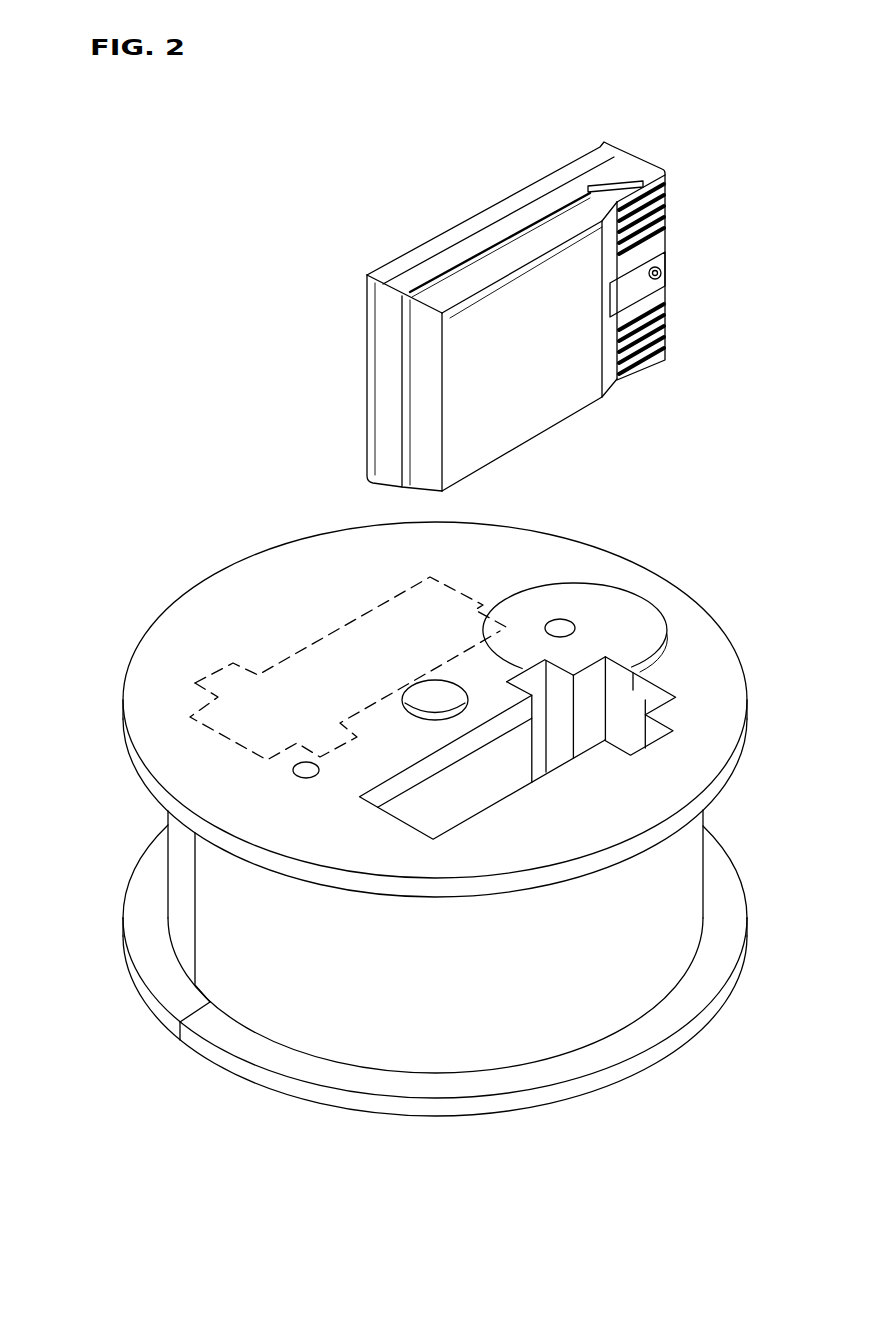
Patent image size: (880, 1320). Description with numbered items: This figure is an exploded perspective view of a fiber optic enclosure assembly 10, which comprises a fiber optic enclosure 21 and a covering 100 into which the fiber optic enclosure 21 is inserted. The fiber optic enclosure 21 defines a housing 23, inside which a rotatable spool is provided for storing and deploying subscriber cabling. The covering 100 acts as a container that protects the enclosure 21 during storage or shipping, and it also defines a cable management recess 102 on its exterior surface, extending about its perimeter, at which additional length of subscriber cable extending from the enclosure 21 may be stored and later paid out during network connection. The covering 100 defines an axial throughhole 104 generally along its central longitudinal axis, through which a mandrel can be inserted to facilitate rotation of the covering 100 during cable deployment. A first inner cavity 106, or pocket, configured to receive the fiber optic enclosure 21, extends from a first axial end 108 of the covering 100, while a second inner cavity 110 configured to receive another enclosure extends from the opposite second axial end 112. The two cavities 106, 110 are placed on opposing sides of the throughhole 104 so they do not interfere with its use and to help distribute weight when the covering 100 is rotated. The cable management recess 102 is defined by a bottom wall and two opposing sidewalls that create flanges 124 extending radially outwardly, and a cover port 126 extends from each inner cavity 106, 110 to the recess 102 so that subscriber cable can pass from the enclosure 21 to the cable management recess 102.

The fiber optic enclosure assembly 10 is at (729, 845).
The fiber optic enclosure 21 is at (344, 246).
The housing 23 is at (550, 418).
The covering 100 is at (110, 835).
The cable management recess 102 is at (710, 822).
The axial throughhole 104 is at (428, 703).
The first inner cavity 106 is at (473, 793).
The first axial end 108 is at (215, 597).
The second inner cavity 110 is at (247, 731).
The second axial end 112 is at (270, 1090).
The flanges 124 is at (745, 733).
The cover port 126 is at (650, 668).